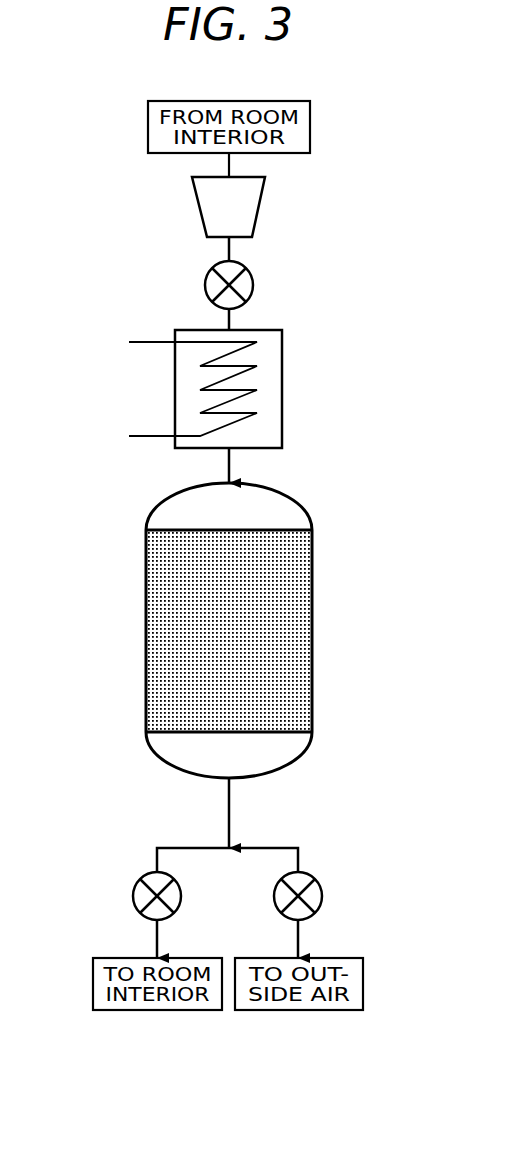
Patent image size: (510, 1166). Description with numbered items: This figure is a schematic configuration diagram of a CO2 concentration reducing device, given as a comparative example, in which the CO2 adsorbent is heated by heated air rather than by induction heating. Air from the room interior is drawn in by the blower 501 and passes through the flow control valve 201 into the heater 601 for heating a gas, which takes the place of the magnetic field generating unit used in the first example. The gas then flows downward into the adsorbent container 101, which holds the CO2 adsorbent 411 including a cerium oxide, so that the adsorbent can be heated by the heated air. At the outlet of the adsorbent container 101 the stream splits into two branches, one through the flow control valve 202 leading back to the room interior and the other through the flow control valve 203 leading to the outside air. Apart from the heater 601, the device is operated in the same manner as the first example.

The blower 501 is at (198, 200).
The flow control valve 201 is at (203, 283).
The heater 601 is at (175, 390).
The adsorbent container 101 is at (162, 498).
The CO2 adsorbent 411 is at (288, 623).
The flow control valve 202 is at (133, 897).
The flow control valve 203 is at (323, 892).